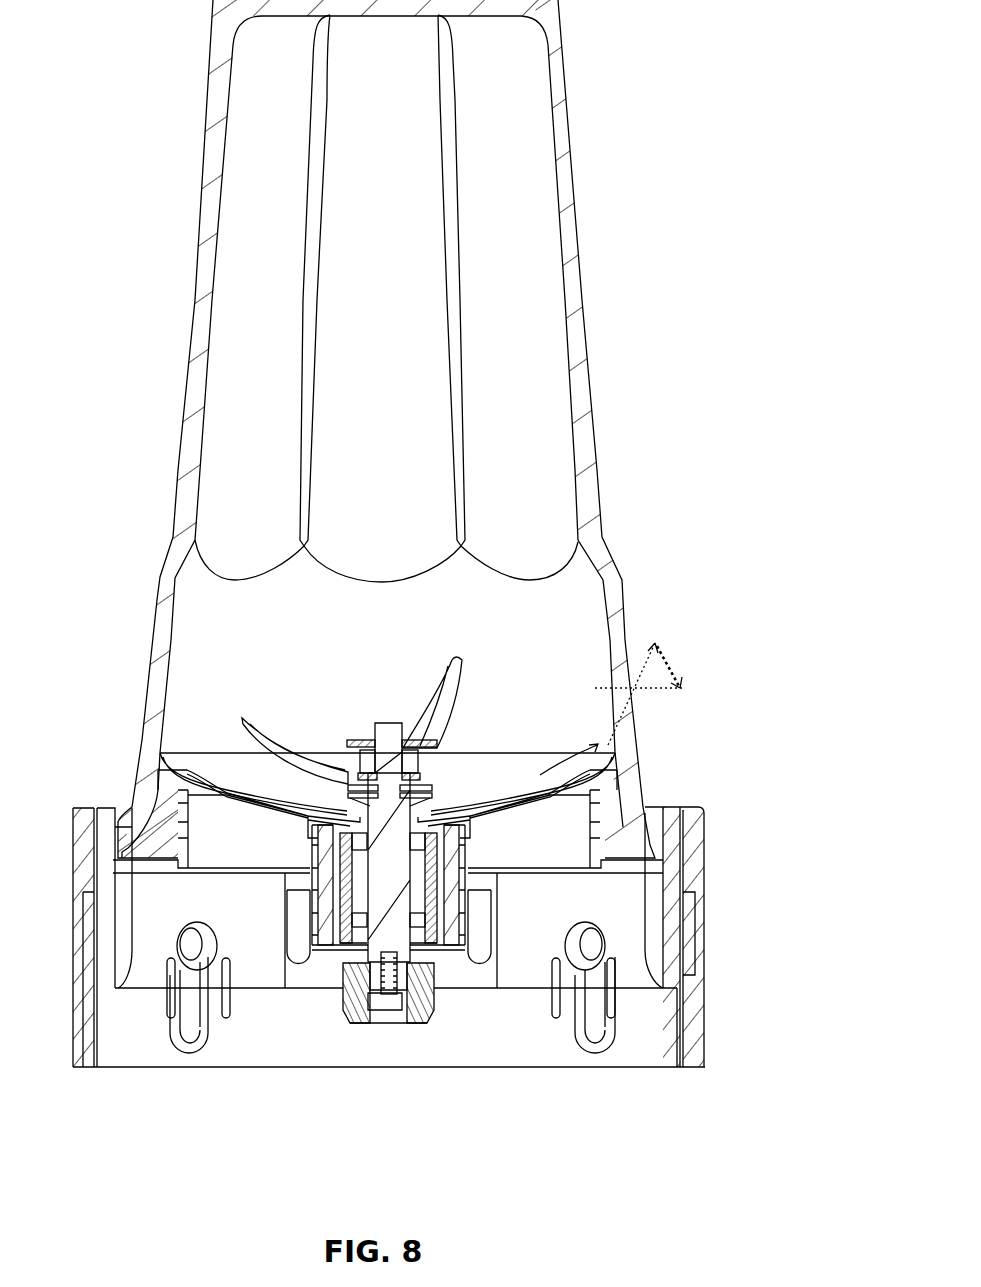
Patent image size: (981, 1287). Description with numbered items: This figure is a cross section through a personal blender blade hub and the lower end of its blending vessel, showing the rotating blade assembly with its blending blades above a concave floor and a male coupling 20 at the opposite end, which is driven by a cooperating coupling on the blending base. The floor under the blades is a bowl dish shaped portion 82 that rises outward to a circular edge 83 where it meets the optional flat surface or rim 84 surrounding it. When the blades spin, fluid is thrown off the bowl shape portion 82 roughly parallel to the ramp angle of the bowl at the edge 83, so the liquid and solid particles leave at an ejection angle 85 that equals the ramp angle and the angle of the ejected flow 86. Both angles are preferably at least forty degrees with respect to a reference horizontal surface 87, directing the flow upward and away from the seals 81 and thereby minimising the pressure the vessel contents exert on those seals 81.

The male coupling 20 is at (352, 1007).
The seals 81 is at (615, 840).
The bowl dish shaped portion 82 is at (621, 757).
The circular edge 83 is at (165, 755).
The rim 84 is at (170, 750).
The ejection angle 85 is at (672, 662).
The angle of the ejected flow 86 is at (568, 757).
The reference horizontal surface 87 is at (652, 693).